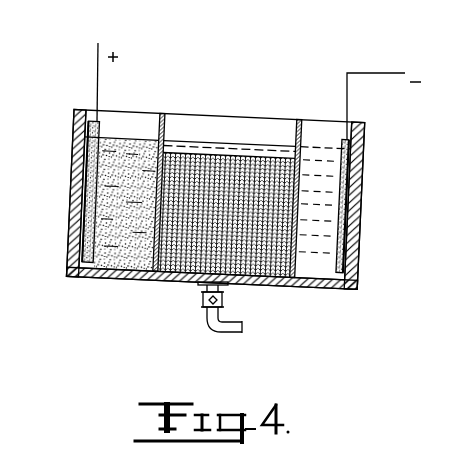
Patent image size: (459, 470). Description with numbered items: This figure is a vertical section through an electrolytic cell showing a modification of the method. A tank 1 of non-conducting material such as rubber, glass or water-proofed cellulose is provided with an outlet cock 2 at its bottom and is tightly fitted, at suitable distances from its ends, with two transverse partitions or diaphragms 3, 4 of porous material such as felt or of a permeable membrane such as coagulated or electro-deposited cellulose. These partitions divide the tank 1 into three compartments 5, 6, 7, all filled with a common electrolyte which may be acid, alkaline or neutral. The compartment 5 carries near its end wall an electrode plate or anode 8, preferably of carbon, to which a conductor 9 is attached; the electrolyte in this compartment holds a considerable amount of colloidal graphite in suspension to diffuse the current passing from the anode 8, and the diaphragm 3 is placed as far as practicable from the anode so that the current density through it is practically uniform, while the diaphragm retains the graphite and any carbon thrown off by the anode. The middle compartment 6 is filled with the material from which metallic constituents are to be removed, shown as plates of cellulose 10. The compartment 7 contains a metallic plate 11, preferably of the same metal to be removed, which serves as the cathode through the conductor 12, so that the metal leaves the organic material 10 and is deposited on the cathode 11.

The tank 1 is at (365, 158).
The outlet cock 2 is at (222, 300).
The transverse partition or diaphragm 3 is at (165, 112).
The transverse partition or diaphragm 4 is at (302, 122).
The compartment 5 is at (119, 193).
The compartment 6 is at (229, 134).
The compartment 7 is at (324, 189).
The electrode plate or anode 8 is at (72, 170).
The conductor 9 is at (97, 79).
The plates of cellulose 10 is at (248, 152).
The metallic plate 11 is at (362, 239).
The conductor 12 is at (348, 103).